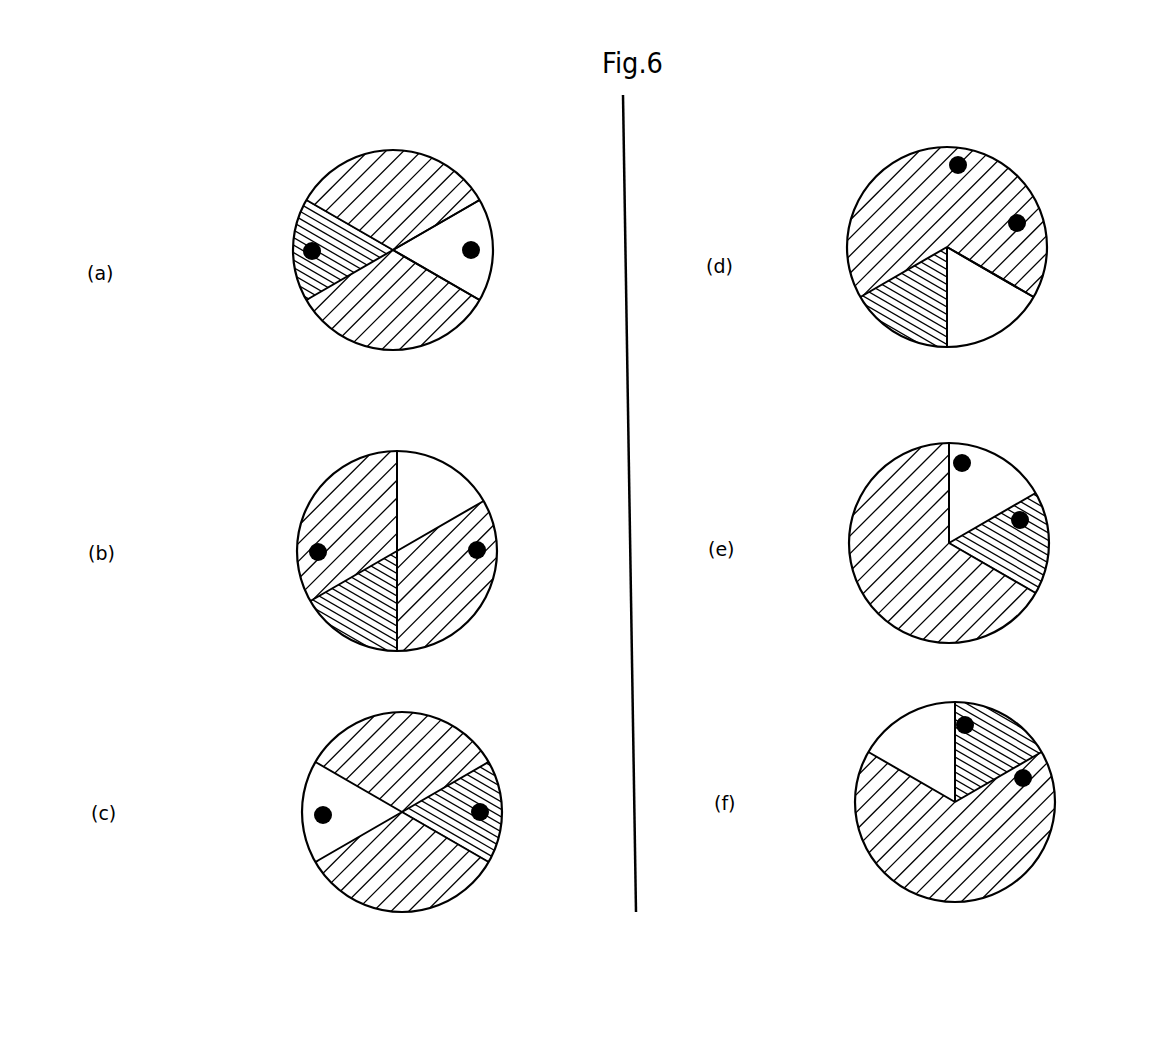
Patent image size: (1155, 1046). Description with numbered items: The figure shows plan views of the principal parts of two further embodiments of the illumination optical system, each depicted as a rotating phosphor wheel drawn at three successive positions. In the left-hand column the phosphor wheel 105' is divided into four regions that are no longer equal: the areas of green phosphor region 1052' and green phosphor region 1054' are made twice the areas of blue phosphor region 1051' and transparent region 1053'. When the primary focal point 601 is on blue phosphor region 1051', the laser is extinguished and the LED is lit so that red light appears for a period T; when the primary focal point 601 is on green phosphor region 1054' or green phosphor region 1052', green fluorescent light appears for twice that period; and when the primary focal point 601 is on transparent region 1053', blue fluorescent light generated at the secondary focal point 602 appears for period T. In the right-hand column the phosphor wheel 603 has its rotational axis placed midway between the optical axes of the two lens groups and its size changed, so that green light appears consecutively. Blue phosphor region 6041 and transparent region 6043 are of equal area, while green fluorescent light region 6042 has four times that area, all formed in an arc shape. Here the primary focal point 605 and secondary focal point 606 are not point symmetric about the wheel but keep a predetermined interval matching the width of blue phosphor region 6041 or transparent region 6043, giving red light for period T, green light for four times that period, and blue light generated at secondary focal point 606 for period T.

The phosphor wheel 105' is at (393, 206).
The blue phosphor region 1051' is at (374, 250).
The green phosphor region 1052' is at (393, 262).
The transparent region 1053' is at (478, 267).
The green phosphor region 1054' is at (393, 250).
The primary focal point 601 is at (312, 243).
The secondary focal point 602 is at (472, 240).
The phosphor wheel 603 is at (941, 121).
The blue phosphor region 6041 is at (898, 321).
The green fluorescent light region 6042 is at (987, 166).
The transparent region 6043 is at (1007, 317).
The primary focal point 605 is at (950, 170).
The secondary focal point 606 is at (1026, 212).